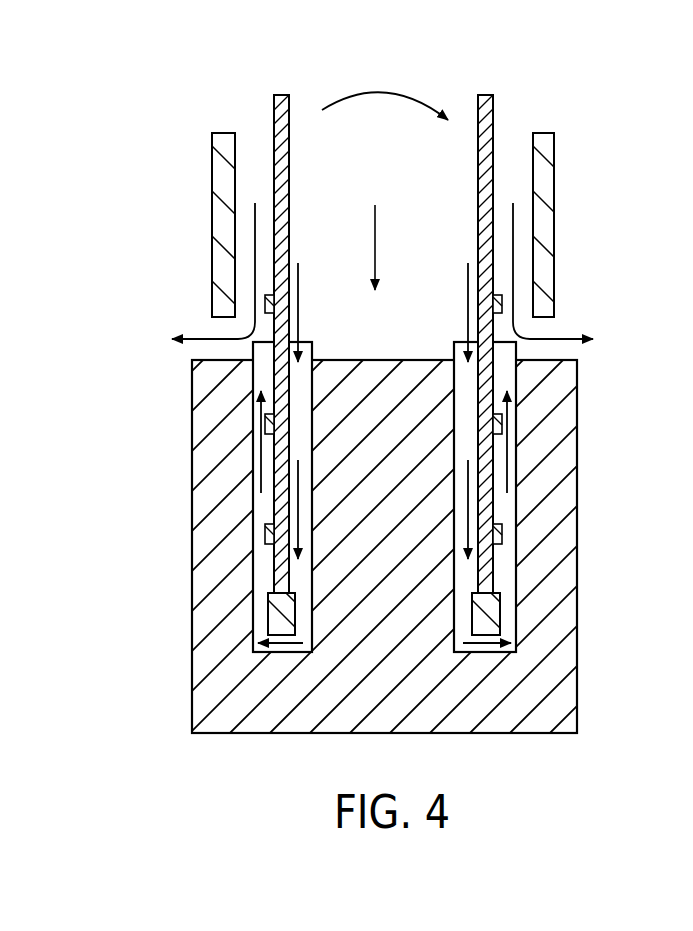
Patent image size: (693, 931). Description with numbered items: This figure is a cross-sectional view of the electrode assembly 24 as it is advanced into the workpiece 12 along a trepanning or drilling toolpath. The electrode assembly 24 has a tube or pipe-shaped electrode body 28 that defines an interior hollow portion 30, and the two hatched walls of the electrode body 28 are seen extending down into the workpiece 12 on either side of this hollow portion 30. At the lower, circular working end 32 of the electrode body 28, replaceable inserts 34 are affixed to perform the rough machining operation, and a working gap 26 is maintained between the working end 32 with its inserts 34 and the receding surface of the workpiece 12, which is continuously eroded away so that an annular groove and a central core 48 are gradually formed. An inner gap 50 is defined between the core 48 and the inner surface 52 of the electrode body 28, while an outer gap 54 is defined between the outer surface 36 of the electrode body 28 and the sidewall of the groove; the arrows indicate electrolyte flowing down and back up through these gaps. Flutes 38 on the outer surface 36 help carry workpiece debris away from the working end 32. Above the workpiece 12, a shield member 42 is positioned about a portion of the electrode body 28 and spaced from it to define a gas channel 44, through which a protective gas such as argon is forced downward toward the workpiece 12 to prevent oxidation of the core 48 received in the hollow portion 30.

The workpiece 12 is at (578, 700).
The electrode assembly 24 is at (127, 252).
The working gap 26 is at (278, 652).
The electrode body 28 is at (493, 117).
The interior hollow portion 30 is at (424, 245).
The working end 32 is at (475, 652).
The replaceable insert 34 is at (268, 614).
The outer surface 36 is at (497, 350).
The flute 38 is at (265, 538).
The shield member 42 is at (212, 230).
The gas channel 44 is at (254, 140).
The core 48 is at (412, 358).
The inner gap 50 is at (300, 386).
The inner surface 52 is at (478, 408).
The outer gap 54 is at (506, 567).